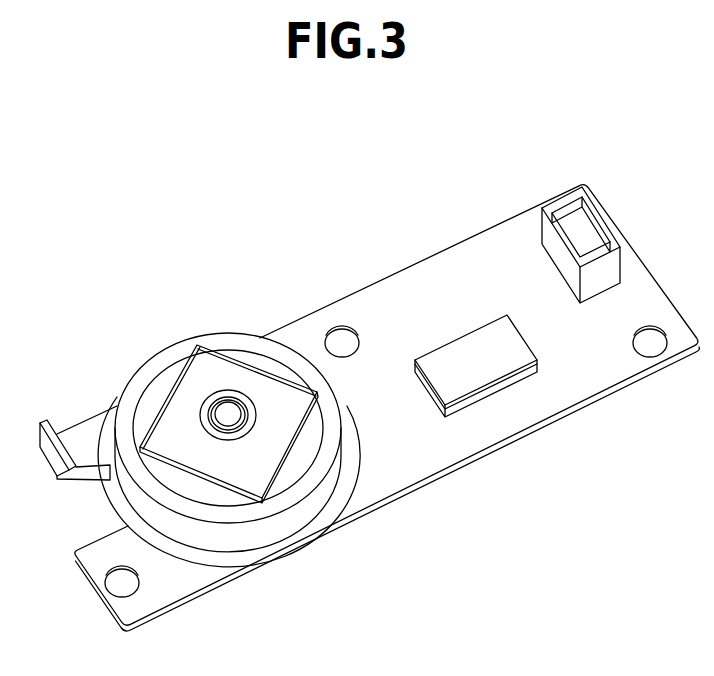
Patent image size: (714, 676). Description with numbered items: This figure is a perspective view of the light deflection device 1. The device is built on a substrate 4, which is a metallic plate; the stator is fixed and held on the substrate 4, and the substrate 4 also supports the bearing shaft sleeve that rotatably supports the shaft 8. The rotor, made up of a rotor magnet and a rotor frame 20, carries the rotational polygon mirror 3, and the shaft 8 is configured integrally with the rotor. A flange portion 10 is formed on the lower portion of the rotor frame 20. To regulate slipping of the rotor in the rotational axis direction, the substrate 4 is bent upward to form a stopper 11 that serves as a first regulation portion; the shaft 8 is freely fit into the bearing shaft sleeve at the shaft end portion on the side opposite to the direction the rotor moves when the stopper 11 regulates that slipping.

The light deflection device 1 is at (313, 254).
The rotational polygon mirror 3 is at (235, 378).
The substrate 4 is at (508, 412).
The shaft 8 is at (223, 405).
The flange portion 10 is at (277, 550).
The stopper 11 is at (87, 481).
The rotor frame 20 is at (302, 517).